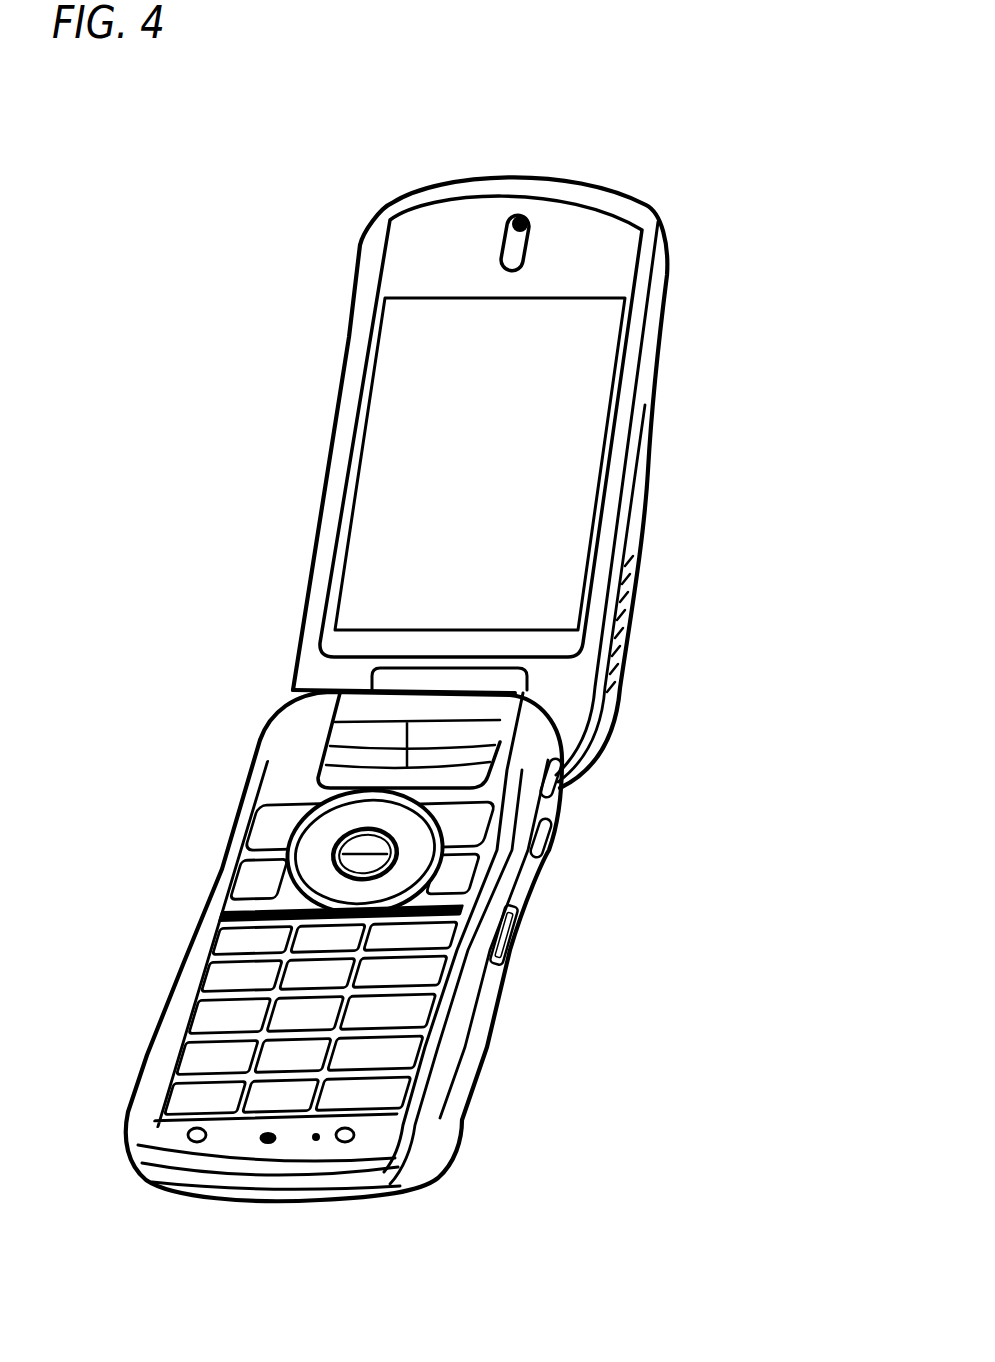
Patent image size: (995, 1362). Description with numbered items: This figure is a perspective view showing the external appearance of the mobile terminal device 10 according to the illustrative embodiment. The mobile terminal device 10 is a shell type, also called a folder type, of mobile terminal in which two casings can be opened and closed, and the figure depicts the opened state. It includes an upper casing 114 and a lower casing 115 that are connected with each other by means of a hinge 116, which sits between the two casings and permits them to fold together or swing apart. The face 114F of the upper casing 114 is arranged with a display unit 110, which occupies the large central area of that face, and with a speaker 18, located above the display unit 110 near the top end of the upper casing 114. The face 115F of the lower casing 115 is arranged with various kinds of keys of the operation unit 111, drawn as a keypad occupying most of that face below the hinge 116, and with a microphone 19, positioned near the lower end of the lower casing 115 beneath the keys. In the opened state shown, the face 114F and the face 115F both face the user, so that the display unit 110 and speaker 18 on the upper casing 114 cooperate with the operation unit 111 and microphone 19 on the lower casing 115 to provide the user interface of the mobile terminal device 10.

The mobile terminal device 10 is at (657, 132).
The speaker 18 is at (517, 214).
The display unit 110 is at (400, 453).
The operation unit 111 is at (252, 932).
The upper casing 114 is at (636, 461).
The face of the upper casing 114F is at (612, 277).
The lower casing 115 is at (524, 897).
The face of the lower casing 115F is at (420, 1075).
The hinge 116 is at (470, 708).
The microphone 19 is at (270, 1143).